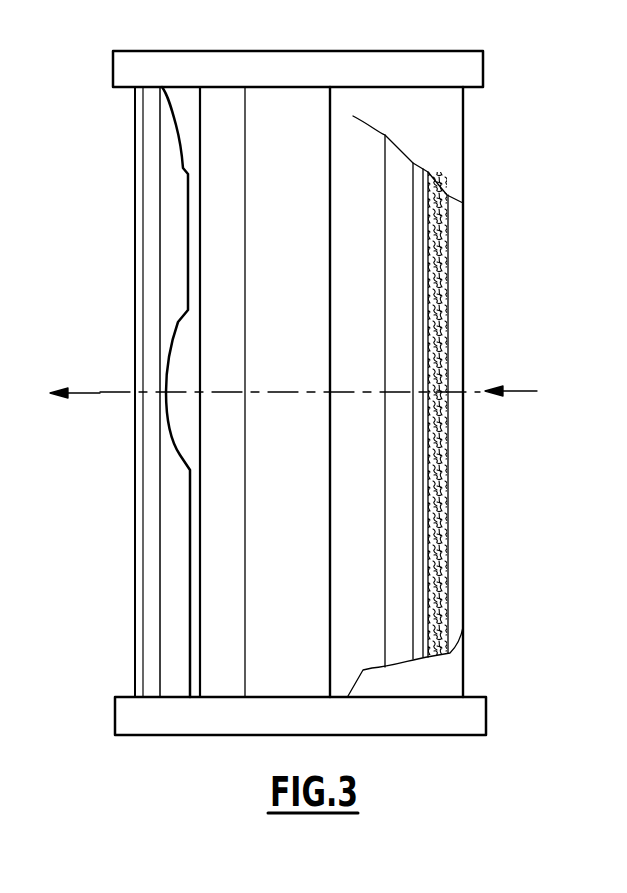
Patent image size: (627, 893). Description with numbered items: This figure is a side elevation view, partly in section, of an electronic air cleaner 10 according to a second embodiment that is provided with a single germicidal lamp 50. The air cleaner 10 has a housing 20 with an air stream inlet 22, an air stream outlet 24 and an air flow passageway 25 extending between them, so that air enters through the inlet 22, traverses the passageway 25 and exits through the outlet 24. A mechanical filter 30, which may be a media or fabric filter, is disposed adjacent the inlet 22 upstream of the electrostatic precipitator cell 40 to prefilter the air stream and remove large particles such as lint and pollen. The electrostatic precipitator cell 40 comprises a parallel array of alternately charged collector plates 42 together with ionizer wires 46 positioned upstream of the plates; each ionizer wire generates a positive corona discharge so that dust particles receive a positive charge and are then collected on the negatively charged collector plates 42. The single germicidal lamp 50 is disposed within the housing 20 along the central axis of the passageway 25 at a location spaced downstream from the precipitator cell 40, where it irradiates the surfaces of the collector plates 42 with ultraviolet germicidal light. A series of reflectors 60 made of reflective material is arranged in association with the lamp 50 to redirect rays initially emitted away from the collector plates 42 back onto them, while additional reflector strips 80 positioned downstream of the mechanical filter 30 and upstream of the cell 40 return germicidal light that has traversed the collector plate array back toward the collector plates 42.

The electronic air cleaner 10 is at (526, 105).
The housing 20 is at (465, 669).
The air stream inlet 22 is at (465, 316).
The air stream outlet 24 is at (133, 441).
The air flow passageway 25 is at (241, 575).
The mechanical filter 30 is at (440, 250).
The electrostatic precipitator cell 40 is at (351, 126).
The collector plates 42 is at (302, 249).
The ionizer wires 46 is at (386, 484).
The germicidal lamp 50 is at (202, 331).
The reflectors 60 is at (190, 206).
The reflector strips 80 is at (420, 567).